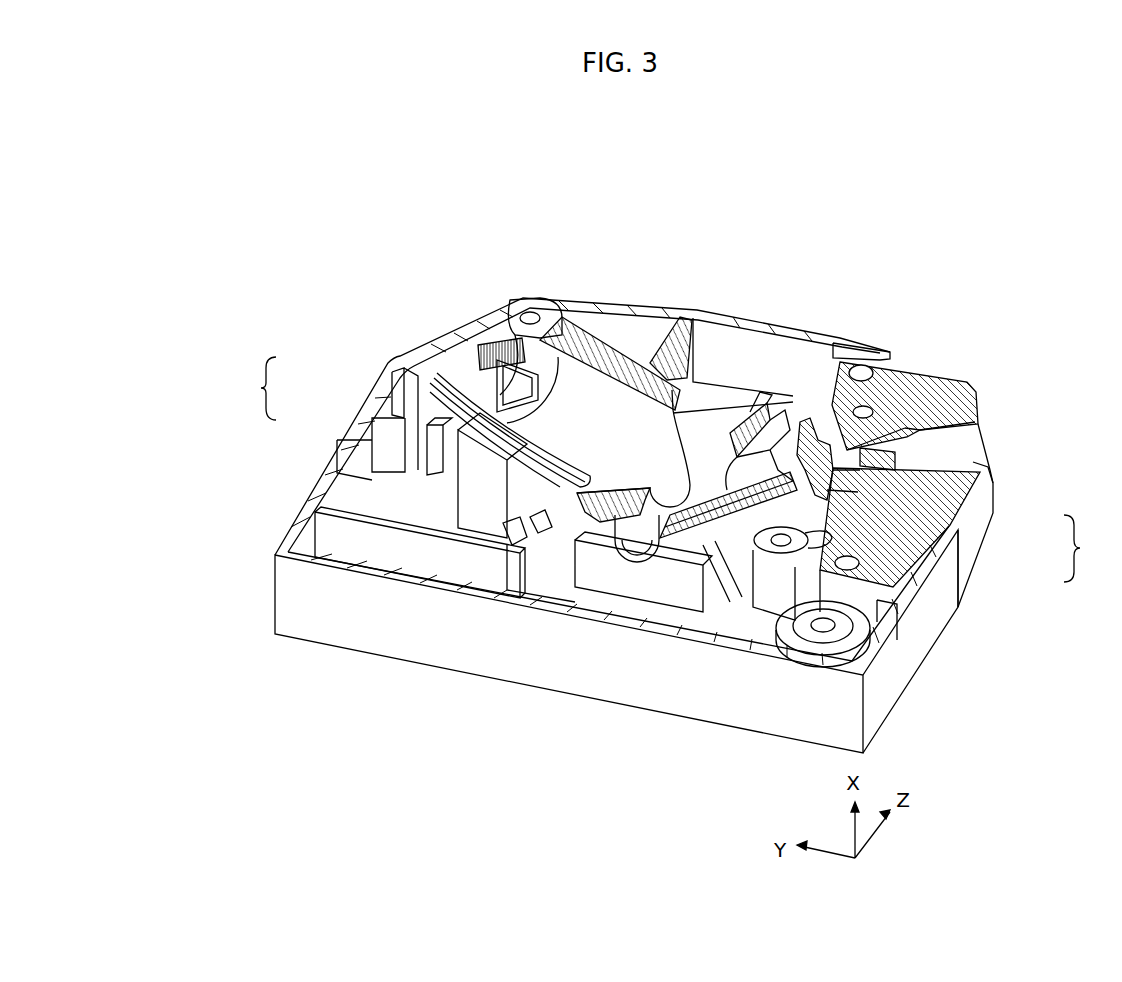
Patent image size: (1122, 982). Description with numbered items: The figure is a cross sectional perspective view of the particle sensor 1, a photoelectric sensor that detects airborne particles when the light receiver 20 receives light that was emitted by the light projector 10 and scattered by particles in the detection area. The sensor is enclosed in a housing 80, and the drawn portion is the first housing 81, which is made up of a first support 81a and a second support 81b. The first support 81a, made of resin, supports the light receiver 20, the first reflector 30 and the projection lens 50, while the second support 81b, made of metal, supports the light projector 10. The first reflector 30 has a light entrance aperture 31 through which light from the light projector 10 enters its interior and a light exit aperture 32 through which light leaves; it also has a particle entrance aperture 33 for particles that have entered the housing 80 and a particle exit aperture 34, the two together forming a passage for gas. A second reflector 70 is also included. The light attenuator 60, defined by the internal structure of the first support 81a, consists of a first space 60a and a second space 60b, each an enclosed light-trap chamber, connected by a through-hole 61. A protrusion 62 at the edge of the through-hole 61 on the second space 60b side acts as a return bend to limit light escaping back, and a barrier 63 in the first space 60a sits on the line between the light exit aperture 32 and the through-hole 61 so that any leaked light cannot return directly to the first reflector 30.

The particle sensor 1 is at (951, 289).
The light projector 10 is at (905, 452).
The light receiver 20 is at (507, 330).
The first reflector 30 is at (612, 400).
The light entrance aperture 31 is at (793, 420).
The light exit aperture 32 is at (508, 548).
The particle entrance aperture 33 is at (632, 542).
The particle exit aperture 34 is at (710, 438).
The projection lens 50 is at (820, 450).
The light attenuator 60 is at (249, 388).
The first space 60a is at (366, 450).
The second space 60b is at (390, 402).
The through-hole 61 is at (427, 430).
The protrusion 62 is at (382, 377).
The barrier 63 is at (462, 425).
The second reflector 70 is at (388, 505).
The housing 80 is at (1091, 576).
The first housing 81 is at (1085, 548).
The first support 81a is at (940, 595).
The second support 81b is at (950, 510).